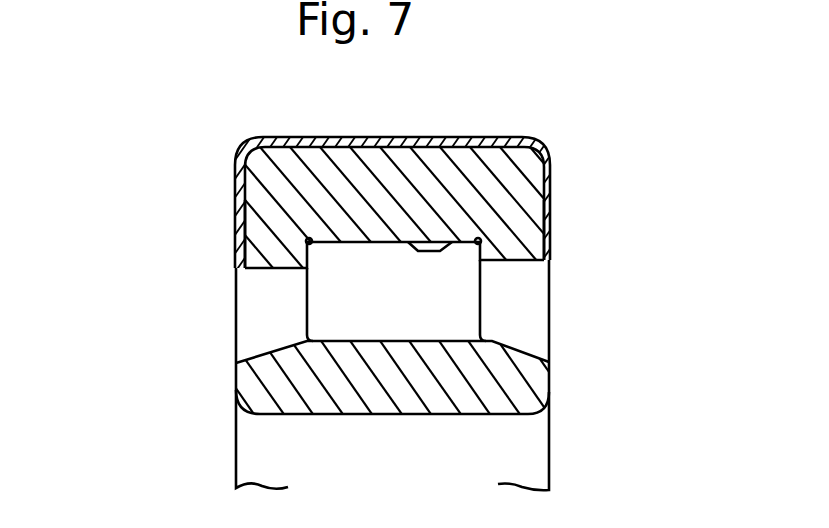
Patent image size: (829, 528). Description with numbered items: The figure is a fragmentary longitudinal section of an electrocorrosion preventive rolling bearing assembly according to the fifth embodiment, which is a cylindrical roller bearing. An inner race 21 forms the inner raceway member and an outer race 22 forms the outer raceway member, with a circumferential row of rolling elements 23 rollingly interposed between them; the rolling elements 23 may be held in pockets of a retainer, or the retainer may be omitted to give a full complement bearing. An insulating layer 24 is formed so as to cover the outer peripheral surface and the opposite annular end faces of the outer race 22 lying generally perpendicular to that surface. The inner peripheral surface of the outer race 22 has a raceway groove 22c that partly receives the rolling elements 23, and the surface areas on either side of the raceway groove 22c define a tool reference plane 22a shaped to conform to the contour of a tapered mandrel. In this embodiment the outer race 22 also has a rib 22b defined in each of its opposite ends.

The inner race 21 is at (495, 400).
The outer race 22 is at (460, 195).
The tool reference plane 22a is at (285, 270).
The rib 22b is at (267, 240).
The raceway groove 22c is at (453, 238).
The rolling elements 23 is at (328, 312).
The insulating layer 24 is at (424, 138).